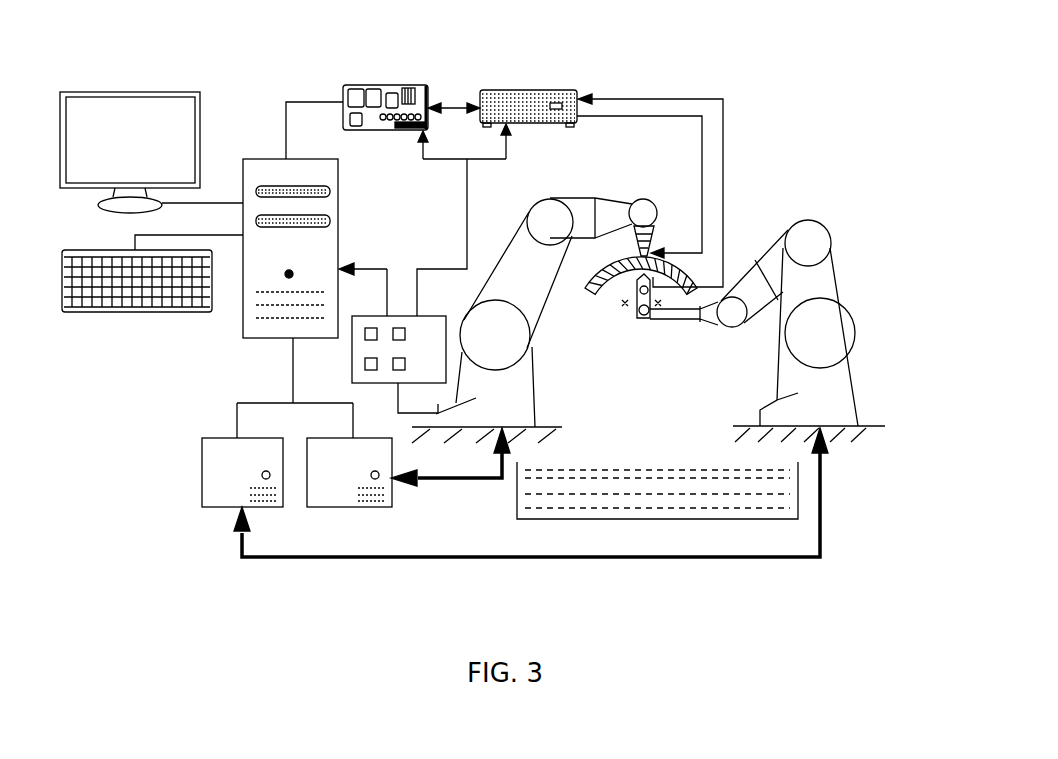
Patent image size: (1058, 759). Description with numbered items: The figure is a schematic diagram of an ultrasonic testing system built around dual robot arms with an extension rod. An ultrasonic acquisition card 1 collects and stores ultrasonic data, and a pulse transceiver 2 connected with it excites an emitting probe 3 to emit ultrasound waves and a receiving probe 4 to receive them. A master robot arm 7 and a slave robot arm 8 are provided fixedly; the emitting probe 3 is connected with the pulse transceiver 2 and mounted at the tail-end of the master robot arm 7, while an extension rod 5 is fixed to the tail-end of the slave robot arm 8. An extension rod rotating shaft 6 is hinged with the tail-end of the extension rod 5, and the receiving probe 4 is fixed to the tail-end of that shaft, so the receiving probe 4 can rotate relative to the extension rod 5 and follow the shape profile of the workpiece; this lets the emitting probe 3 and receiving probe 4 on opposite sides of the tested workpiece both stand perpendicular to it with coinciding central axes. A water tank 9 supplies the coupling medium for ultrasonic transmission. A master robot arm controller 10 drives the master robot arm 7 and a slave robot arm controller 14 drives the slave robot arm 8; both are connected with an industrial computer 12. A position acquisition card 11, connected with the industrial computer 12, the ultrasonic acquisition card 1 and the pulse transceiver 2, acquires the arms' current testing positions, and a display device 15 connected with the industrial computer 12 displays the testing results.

The ultrasonic acquisition card 1 is at (380, 90).
The pulse transceiver 2 is at (523, 107).
The emitting probe 3 is at (645, 235).
The receiving probe 4 is at (660, 278).
The extension rod 5 is at (673, 319).
The extension rod rotating shaft 6 is at (641, 318).
The master robot arm 7 is at (500, 347).
The slave robot arm 8 is at (815, 347).
The water tank 9 is at (682, 490).
The master robot arm controller 10 is at (342, 488).
The position acquisition card 11 is at (408, 362).
The industrial computer 12 is at (257, 304).
The slave robot arm controller 14 is at (267, 498).
The display device 15 is at (123, 115).